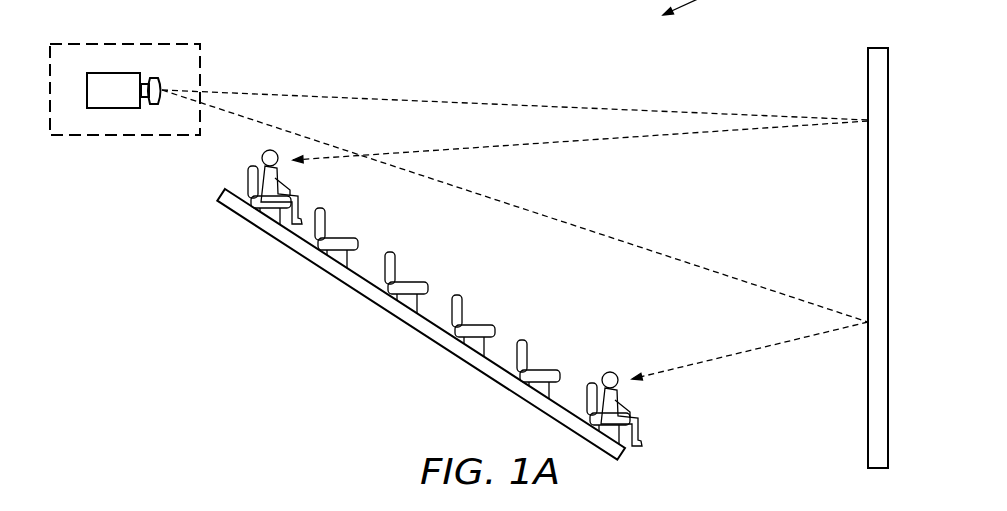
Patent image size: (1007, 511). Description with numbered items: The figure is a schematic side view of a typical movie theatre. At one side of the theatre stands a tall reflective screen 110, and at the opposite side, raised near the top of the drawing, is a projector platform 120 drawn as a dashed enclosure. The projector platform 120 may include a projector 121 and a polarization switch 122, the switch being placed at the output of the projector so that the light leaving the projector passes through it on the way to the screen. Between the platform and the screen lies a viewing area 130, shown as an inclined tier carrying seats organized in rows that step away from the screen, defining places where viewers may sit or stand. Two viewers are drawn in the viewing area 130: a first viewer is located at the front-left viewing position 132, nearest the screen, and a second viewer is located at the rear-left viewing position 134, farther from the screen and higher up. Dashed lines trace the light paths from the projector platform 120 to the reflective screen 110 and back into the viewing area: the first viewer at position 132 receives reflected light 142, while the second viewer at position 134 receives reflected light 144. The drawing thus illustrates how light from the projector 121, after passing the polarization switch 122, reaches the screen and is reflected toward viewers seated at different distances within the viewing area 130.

The reflective screen 110 is at (868, 90).
The projector platform 120 is at (100, 138).
The projector 121 is at (117, 73).
The polarization switch 122 is at (160, 84).
The viewing area 130 is at (432, 343).
The front-left viewing position 132 is at (640, 416).
The rear-left viewing position 134 is at (300, 197).
The reflected light 142 is at (600, 232).
The reflected light 144 is at (533, 107).